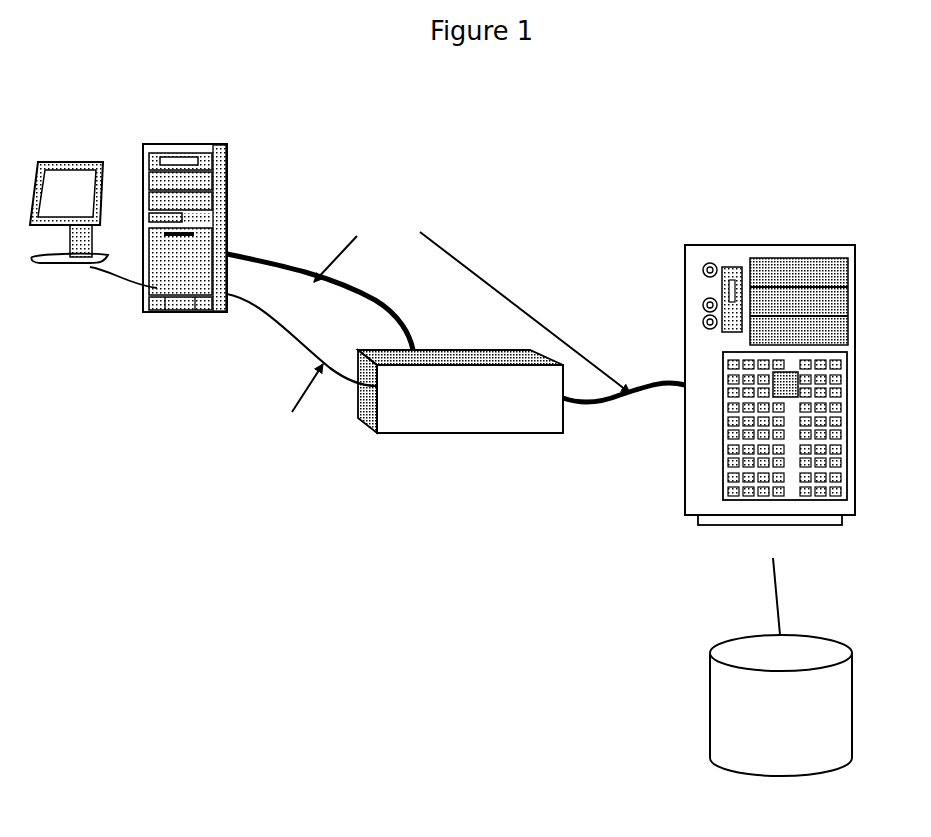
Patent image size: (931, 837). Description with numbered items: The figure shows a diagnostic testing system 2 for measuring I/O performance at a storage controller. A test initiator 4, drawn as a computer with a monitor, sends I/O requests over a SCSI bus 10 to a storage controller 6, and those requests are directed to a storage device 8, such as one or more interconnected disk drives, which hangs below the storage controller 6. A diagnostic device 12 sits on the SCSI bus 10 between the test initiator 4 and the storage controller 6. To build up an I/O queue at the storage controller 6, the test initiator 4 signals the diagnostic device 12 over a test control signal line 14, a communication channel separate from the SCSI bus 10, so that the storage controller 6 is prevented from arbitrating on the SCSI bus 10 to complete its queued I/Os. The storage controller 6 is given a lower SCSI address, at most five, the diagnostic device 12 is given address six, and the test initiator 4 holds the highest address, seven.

The testing system 2 is at (637, 112).
The test initiator 4 is at (225, 144).
The storage controller 6 is at (813, 245).
The storage device 8 is at (710, 668).
The SCSI bus 10 is at (450, 222).
The diagnostic device 12 is at (465, 350).
The test control signal line 14 is at (306, 348).